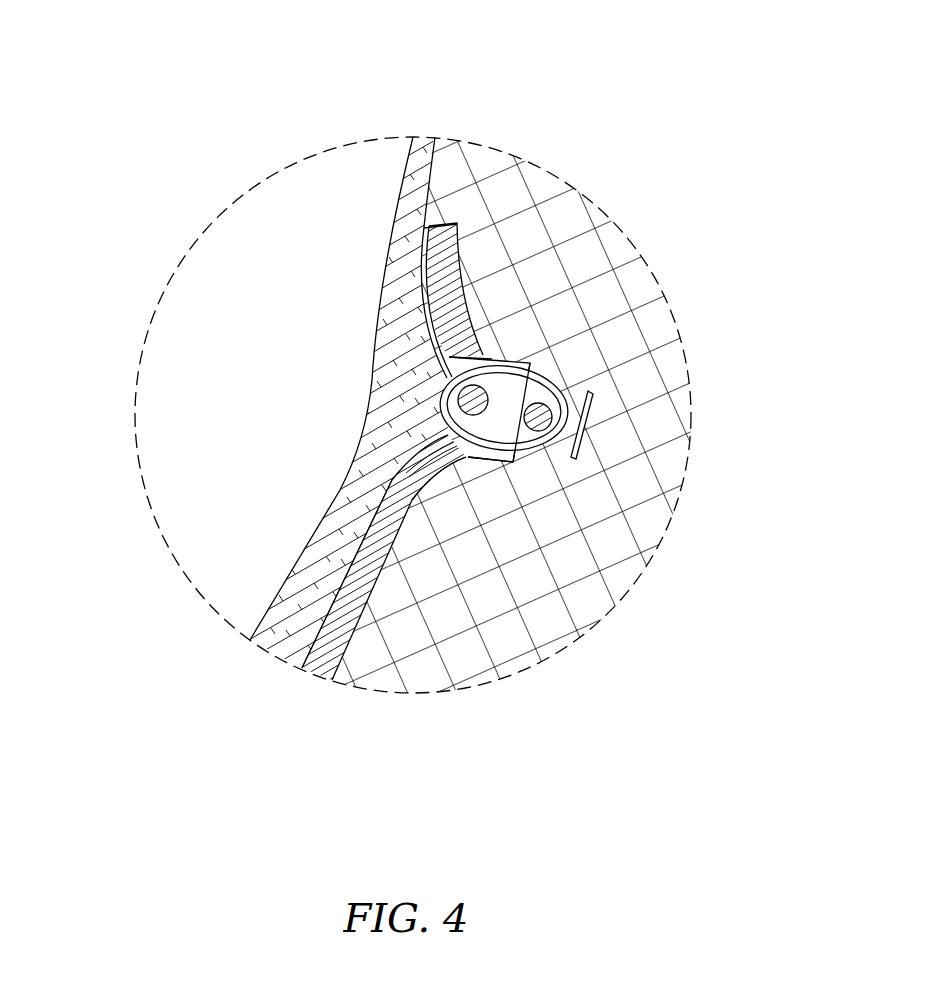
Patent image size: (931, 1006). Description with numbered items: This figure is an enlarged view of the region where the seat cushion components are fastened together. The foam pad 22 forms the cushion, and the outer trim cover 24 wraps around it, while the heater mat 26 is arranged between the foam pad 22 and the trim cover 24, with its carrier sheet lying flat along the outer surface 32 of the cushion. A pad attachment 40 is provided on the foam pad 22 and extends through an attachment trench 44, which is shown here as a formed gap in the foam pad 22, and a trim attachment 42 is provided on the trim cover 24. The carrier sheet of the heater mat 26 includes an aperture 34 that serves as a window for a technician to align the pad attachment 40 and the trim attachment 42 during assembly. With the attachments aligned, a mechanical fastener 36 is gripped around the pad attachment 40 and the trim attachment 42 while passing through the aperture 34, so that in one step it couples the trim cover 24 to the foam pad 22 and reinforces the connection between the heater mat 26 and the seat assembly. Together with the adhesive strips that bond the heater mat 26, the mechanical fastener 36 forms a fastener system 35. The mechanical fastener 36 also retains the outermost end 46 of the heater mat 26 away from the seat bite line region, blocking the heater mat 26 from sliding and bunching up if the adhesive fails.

The foam pad 22 is at (798, 623).
The outer trim cover 24 is at (98, 656).
The heater mat 26 is at (357, 808).
The outer surface 32 is at (417, 486).
The aperture 34 is at (628, 65).
The fastener system 35 is at (555, 453).
The mechanical fastener 36 is at (800, 270).
The pad attachment 40 is at (798, 417).
The trim attachment 42 is at (122, 71).
The attachment trench 44 is at (481, 459).
The outermost end 46 is at (438, 225).